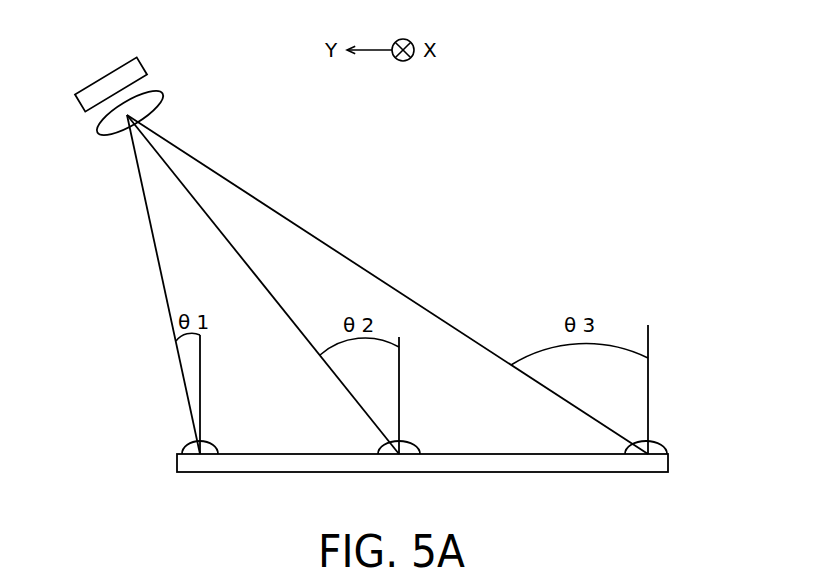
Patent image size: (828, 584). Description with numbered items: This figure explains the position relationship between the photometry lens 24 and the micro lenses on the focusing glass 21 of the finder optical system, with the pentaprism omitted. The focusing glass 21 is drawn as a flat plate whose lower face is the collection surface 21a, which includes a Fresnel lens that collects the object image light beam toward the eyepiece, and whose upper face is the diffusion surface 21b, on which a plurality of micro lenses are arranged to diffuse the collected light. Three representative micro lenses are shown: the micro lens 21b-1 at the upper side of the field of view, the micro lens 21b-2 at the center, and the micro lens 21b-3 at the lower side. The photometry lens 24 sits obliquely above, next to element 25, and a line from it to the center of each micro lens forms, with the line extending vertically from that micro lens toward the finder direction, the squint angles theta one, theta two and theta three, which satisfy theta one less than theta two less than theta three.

The light source 25 is at (118, 66).
The photometry lens 24 is at (97, 131).
The focusing glass 21 is at (176, 463).
The collection surface 21a is at (262, 495).
The diffusion surface 21b is at (273, 438).
The micro lens 21b-1 is at (182, 448).
The micro lens 21b-2 is at (407, 448).
The micro lens 21b-3 is at (655, 443).